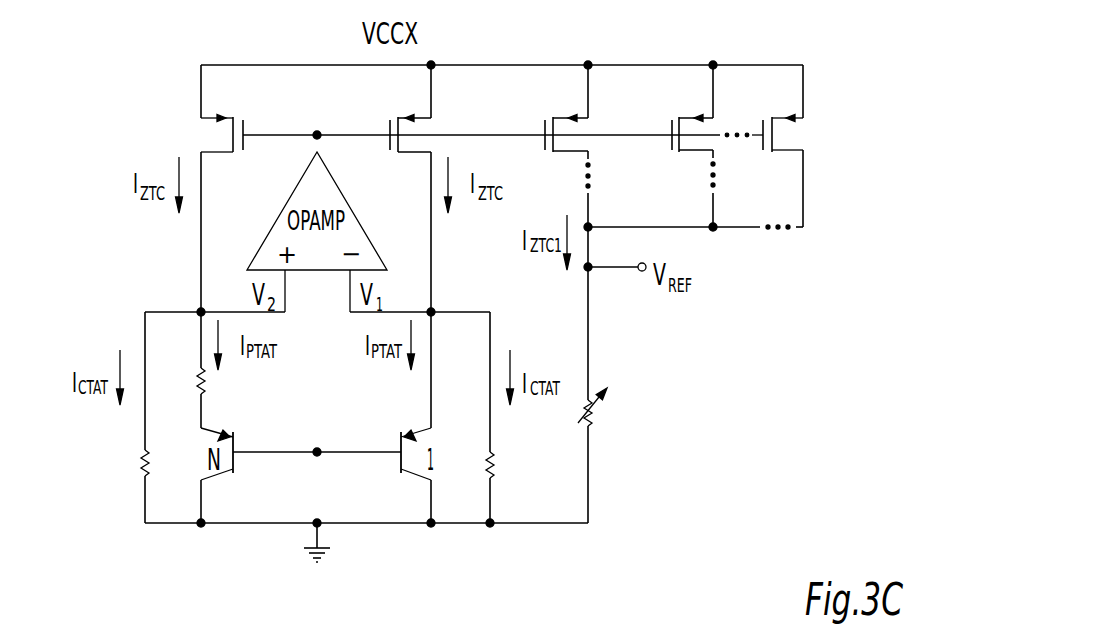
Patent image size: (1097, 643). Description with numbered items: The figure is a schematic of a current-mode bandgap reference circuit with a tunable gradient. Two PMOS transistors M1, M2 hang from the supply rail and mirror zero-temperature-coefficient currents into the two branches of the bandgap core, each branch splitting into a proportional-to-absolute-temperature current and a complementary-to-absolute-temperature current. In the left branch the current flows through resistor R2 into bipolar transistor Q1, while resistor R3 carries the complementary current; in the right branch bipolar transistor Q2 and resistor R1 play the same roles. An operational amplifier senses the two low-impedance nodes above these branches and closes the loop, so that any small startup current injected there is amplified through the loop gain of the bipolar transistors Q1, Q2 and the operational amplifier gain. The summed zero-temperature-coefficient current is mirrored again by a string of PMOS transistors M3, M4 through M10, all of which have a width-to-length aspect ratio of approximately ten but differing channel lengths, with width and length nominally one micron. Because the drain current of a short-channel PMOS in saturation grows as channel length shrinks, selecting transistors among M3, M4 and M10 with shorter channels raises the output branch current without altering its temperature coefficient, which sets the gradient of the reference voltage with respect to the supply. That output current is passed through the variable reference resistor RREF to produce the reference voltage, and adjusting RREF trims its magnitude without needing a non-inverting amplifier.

The PMOS transistor M1 is at (206, 120).
The PMOS transistor M2 is at (397, 120).
The PMOS transistor M3 is at (554, 112).
The PMOS transistor M4 is at (679, 111).
The PMOS transistor M10 is at (770, 146).
The bipolar transistor Q1 is at (259, 462).
The bipolar transistor Q2 is at (374, 462).
The resistor R1 is at (507, 417).
The resistor R2 is at (187, 397).
The resistor R3 is at (132, 417).
The reference resistor RREF is at (609, 455).